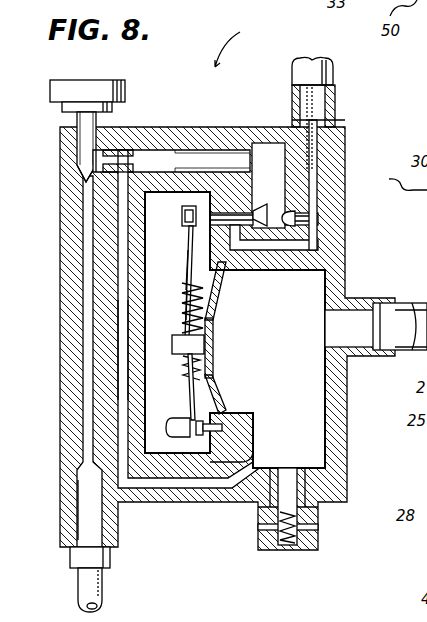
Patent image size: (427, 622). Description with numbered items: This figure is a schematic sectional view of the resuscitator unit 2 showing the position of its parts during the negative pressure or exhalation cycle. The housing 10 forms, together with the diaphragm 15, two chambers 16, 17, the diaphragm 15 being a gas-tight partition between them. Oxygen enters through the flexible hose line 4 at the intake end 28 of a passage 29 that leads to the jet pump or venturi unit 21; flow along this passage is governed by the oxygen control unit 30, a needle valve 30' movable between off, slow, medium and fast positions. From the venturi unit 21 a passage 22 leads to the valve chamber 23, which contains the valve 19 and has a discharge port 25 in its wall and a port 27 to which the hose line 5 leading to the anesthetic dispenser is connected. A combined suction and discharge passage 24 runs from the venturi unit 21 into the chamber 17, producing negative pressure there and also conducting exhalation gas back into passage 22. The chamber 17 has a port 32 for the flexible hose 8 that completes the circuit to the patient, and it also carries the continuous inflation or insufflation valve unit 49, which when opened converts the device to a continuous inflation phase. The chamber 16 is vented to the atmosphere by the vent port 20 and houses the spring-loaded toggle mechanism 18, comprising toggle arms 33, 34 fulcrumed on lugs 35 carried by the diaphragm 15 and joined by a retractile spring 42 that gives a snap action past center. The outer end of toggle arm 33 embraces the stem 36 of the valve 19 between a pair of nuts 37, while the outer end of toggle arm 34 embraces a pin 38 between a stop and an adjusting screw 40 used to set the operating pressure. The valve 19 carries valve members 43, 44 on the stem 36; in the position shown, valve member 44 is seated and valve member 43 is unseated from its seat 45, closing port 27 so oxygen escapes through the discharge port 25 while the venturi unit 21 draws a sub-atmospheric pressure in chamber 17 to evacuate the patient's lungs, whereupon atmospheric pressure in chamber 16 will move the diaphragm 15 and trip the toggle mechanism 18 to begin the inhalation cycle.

The resuscitator unit 2 is at (321, 108).
The flexible hose line 4 is at (83, 587).
The flexible hose line 5 is at (300, 71).
The flexible hose 8 is at (405, 298).
The housing 10 is at (175, 126).
The diaphragm 15 is at (210, 312).
The chamber 16 is at (171, 270).
The chamber 17 is at (235, 330).
The toggle mechanism 18 is at (171, 317).
The valve 19 is at (279, 204).
The vent port 20 is at (180, 487).
The jet pump or venturi unit 21 is at (102, 185).
The passage 22 is at (222, 150).
The valve chamber 23 is at (270, 154).
The combined suction and discharge passage 24 is at (122, 351).
The discharge port 25 is at (287, 253).
The port 27 is at (314, 200).
The intake end 28 is at (88, 518).
The passage 29 is at (88, 398).
The oxygen control unit 30 is at (87, 117).
The needle valve 30' is at (62, 164).
The port 32 is at (360, 334).
The toggle arm 33 is at (186, 279).
The toggle arm 34 is at (195, 404).
The lugs 35 is at (173, 347).
The stem 36 is at (186, 248).
The nuts 37 is at (180, 206).
The pin 38 is at (215, 431).
The adjusting screw 40 is at (178, 430).
The retractile spring 42 is at (212, 325).
The valve member 43 is at (257, 228).
The valve member 44 is at (316, 220).
The seat 45 is at (263, 190).
The continuous inflation or insufflation valve unit 49 is at (280, 551).